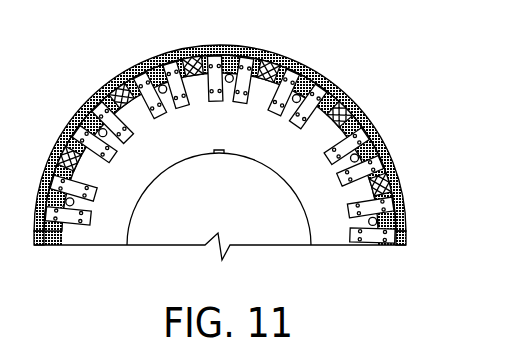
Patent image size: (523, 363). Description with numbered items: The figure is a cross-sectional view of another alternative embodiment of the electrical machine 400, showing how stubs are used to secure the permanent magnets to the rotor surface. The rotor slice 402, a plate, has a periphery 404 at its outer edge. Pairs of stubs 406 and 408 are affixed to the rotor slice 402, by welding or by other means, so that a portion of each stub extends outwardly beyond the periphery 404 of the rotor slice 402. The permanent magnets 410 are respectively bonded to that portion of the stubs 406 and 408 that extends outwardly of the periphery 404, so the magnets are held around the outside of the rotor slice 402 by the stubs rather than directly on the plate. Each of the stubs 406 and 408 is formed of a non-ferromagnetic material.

The electrical machine 400 is at (400, 134).
The rotor slice 402 is at (129, 228).
The periphery 404 is at (66, 181).
The stub 406 is at (104, 153).
The stub 408 is at (113, 125).
The permanent magnet 410 is at (83, 124).